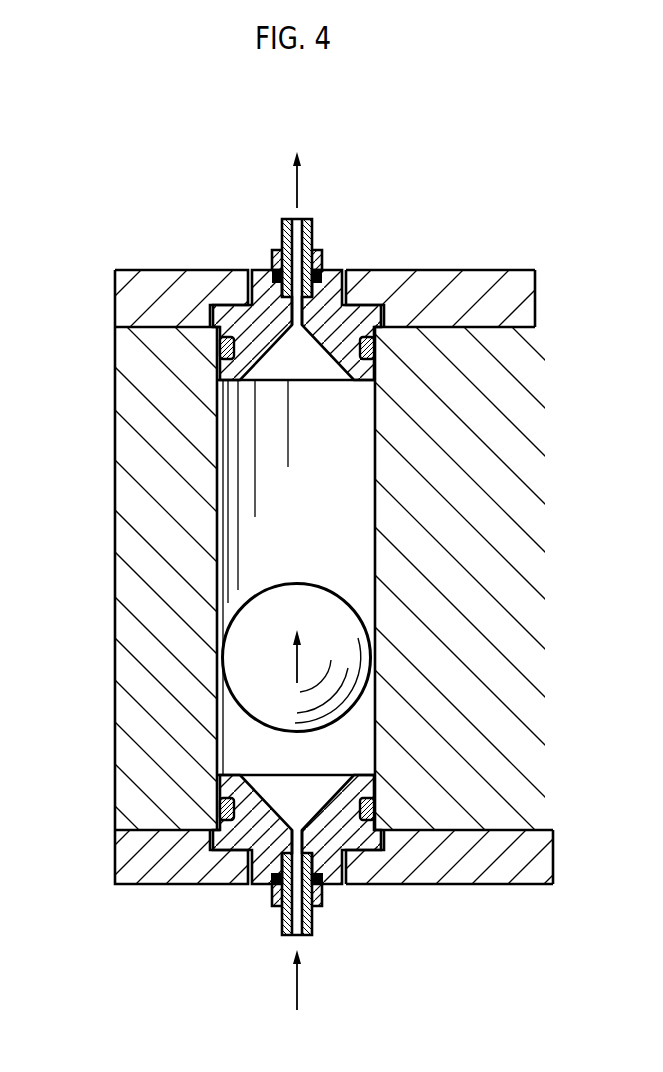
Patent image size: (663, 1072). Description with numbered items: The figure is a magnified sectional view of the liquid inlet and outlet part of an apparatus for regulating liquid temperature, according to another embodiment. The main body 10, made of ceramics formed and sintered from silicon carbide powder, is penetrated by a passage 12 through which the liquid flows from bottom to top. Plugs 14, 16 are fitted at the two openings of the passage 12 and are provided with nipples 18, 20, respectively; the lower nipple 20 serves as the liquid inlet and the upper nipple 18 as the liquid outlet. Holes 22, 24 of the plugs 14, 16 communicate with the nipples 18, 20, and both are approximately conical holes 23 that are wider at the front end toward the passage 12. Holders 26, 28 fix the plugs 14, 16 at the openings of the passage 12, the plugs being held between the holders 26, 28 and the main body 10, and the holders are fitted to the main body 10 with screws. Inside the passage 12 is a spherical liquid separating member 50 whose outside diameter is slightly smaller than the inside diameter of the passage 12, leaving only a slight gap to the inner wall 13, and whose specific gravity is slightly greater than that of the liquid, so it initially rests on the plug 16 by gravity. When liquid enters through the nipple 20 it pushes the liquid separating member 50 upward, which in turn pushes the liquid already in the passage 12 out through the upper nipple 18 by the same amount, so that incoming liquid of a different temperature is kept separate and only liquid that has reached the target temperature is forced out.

The main body 10 is at (114, 606).
The passage 12 is at (263, 478).
The inner wall 13 is at (222, 573).
The plug 14 is at (238, 318).
The plug 16 is at (222, 850).
The nipple 18 is at (313, 230).
The nipple 20 is at (313, 934).
The hole 22 is at (300, 318).
The conical hole 23 is at (303, 381).
The hole 24 is at (256, 884).
The holder 26 is at (115, 297).
The holder 28 is at (113, 881).
The liquid separating member 50 is at (248, 675).